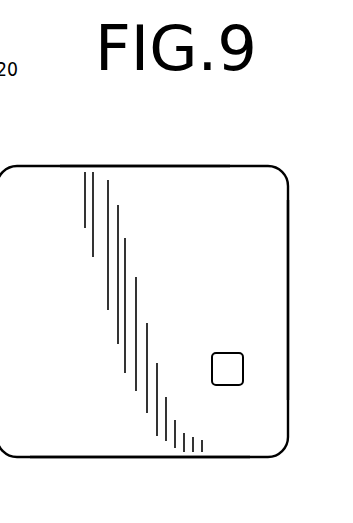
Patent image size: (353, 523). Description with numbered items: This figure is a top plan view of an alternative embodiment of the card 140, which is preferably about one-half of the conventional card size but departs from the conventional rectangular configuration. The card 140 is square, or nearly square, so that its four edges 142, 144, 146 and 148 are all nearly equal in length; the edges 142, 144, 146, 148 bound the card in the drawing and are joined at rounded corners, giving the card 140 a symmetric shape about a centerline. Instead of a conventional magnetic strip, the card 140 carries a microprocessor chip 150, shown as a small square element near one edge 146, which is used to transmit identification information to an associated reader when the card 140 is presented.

The card 140 is at (155, 135).
The edge 142 is at (0, 281).
The edge 144 is at (146, 167).
The edge 146 is at (288, 217).
The edge 148 is at (60, 457).
The microprocessor chip 150 is at (225, 352).